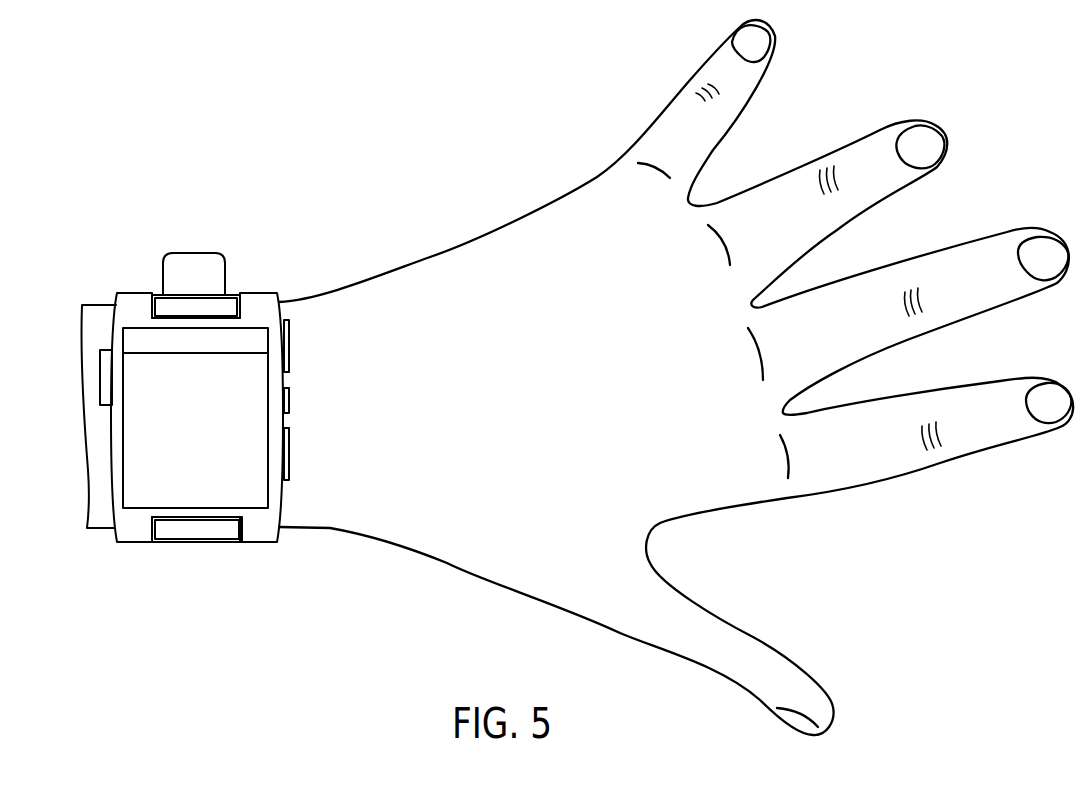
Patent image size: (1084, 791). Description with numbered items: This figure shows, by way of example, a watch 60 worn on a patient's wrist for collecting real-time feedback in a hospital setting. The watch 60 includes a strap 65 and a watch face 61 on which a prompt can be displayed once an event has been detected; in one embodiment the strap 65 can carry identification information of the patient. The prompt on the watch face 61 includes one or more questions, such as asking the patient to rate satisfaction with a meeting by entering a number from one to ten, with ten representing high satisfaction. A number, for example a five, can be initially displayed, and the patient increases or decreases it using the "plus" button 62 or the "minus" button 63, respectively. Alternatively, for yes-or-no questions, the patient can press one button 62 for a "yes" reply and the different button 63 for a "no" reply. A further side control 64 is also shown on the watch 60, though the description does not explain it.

The watch 60 is at (217, 218).
The watch face 61 is at (248, 510).
The plus button 62 is at (285, 320).
The minus button 63 is at (285, 485).
The button 64 is at (100, 378).
The strap 65 is at (227, 293).